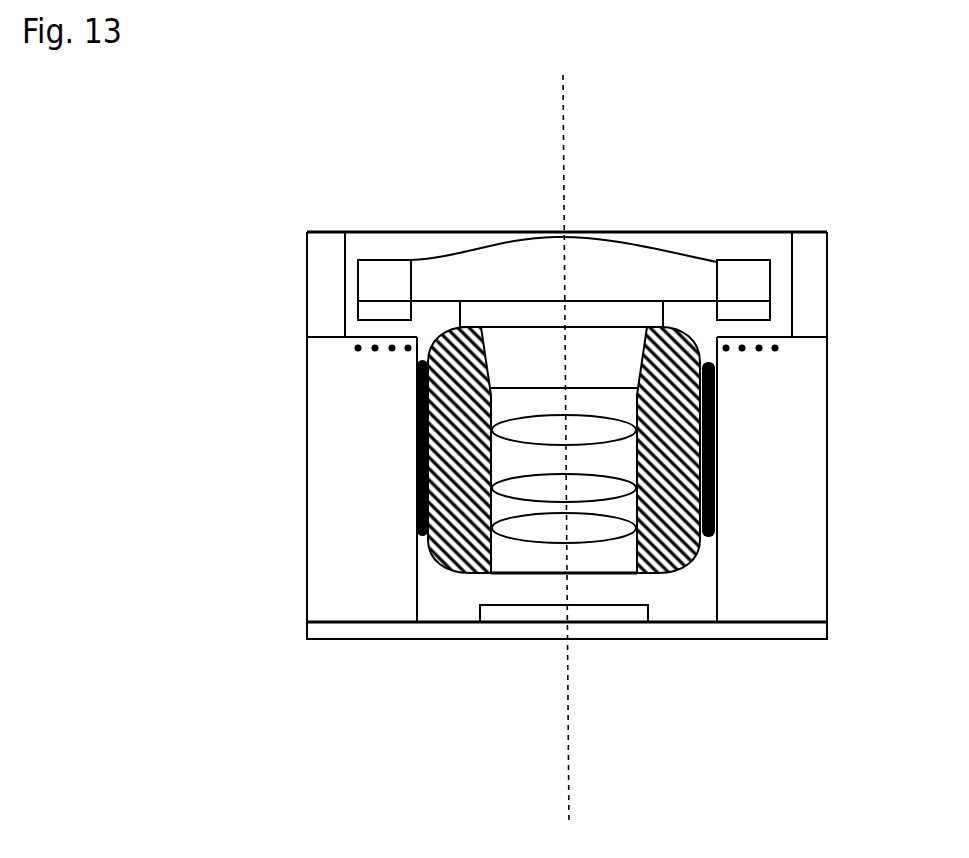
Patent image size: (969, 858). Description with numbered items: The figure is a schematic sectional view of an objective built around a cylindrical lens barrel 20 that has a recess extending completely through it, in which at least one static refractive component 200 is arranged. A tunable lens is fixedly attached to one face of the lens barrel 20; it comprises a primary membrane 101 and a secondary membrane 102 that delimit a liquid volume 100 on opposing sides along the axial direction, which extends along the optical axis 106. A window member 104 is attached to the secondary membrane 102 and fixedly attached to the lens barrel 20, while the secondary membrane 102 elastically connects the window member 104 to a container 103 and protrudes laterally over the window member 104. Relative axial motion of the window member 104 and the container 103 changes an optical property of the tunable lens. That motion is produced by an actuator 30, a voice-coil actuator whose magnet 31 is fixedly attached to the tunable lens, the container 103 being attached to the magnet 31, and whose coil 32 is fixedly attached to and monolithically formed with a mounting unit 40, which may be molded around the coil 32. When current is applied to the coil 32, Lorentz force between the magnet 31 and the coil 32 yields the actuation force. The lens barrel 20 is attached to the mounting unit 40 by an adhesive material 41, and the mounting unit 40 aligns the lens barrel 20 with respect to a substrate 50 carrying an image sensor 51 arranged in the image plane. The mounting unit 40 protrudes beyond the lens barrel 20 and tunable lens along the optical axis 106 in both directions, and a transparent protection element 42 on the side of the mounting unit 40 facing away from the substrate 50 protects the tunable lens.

The lens barrel 20 is at (457, 570).
The actuator 30 is at (218, 333).
The magnet 31 is at (375, 312).
The coil 32 is at (355, 348).
The mounting unit 40 is at (803, 518).
The adhesive material 41 is at (718, 472).
The protection element 42 is at (770, 232).
The substrate 50 is at (808, 633).
The image sensor 51 is at (518, 612).
The liquid volume 100 is at (564, 278).
The primary membrane 101 is at (452, 255).
The secondary membrane 102 is at (433, 300).
The container 103 is at (745, 273).
The window member 104 is at (578, 305).
The optical axis 106 is at (563, 127).
The static refractive component 200 is at (570, 532).